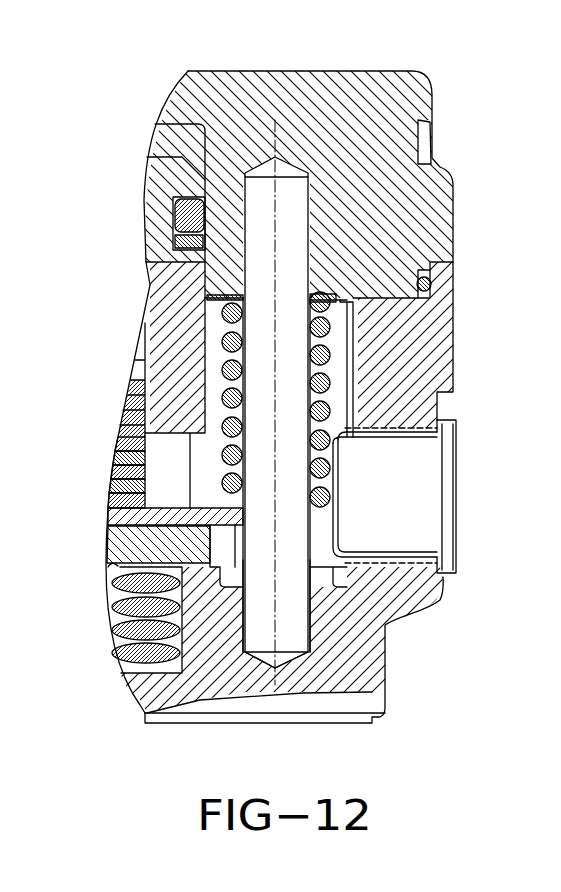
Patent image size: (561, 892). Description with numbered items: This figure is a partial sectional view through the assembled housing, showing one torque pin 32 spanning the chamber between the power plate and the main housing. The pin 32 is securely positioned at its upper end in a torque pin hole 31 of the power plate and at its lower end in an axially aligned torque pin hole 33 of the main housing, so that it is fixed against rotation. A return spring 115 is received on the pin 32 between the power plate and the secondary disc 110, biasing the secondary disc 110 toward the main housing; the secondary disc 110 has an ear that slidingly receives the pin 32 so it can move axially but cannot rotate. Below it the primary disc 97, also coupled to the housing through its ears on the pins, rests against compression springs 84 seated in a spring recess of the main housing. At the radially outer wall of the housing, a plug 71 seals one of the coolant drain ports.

The torque pin hole 31 is at (247, 233).
The torque pin 32 is at (300, 216).
The torque pin hole 33 is at (302, 605).
The plug 71 is at (398, 503).
The compression spring 84 is at (160, 626).
The primary disc 97 is at (185, 547).
The secondary disc 110 is at (180, 518).
The return spring 115 is at (330, 355).